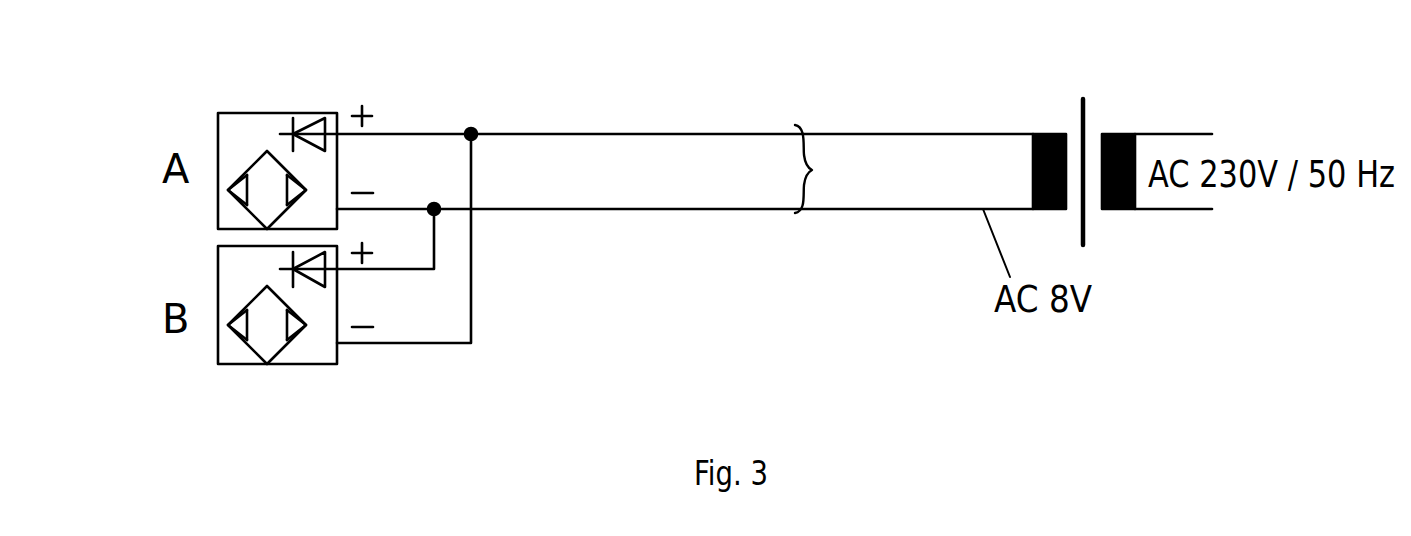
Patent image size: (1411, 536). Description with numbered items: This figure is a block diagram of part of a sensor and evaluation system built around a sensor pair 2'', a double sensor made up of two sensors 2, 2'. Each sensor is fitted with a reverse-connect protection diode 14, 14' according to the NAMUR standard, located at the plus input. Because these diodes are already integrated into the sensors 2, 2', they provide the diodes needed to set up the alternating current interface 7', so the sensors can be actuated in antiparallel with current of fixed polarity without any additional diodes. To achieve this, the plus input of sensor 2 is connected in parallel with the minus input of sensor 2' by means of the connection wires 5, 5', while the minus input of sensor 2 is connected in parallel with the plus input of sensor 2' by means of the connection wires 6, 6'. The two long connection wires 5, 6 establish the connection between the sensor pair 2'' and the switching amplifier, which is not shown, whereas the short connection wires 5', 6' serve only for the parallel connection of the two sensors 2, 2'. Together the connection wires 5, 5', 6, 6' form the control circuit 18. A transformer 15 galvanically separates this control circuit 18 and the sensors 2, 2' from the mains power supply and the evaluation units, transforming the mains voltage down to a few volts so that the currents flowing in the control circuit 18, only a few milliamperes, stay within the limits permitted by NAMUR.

The sensor 2 is at (266, 135).
The sensor 2' is at (271, 346).
The sensor pair 2'' is at (203, 340).
The reverse-connect protection diode 14 is at (308, 96).
The reverse-connect protection diode 14' is at (319, 349).
The alternating current or alternating voltage interface 7' is at (413, 117).
The connection wire 5 is at (752, 91).
The connection wire 6 is at (733, 263).
The connection wire 5' is at (460, 235).
The connection wire 6' is at (447, 289).
The control circuit 18 is at (831, 185).
The transformer 15 is at (1125, 220).